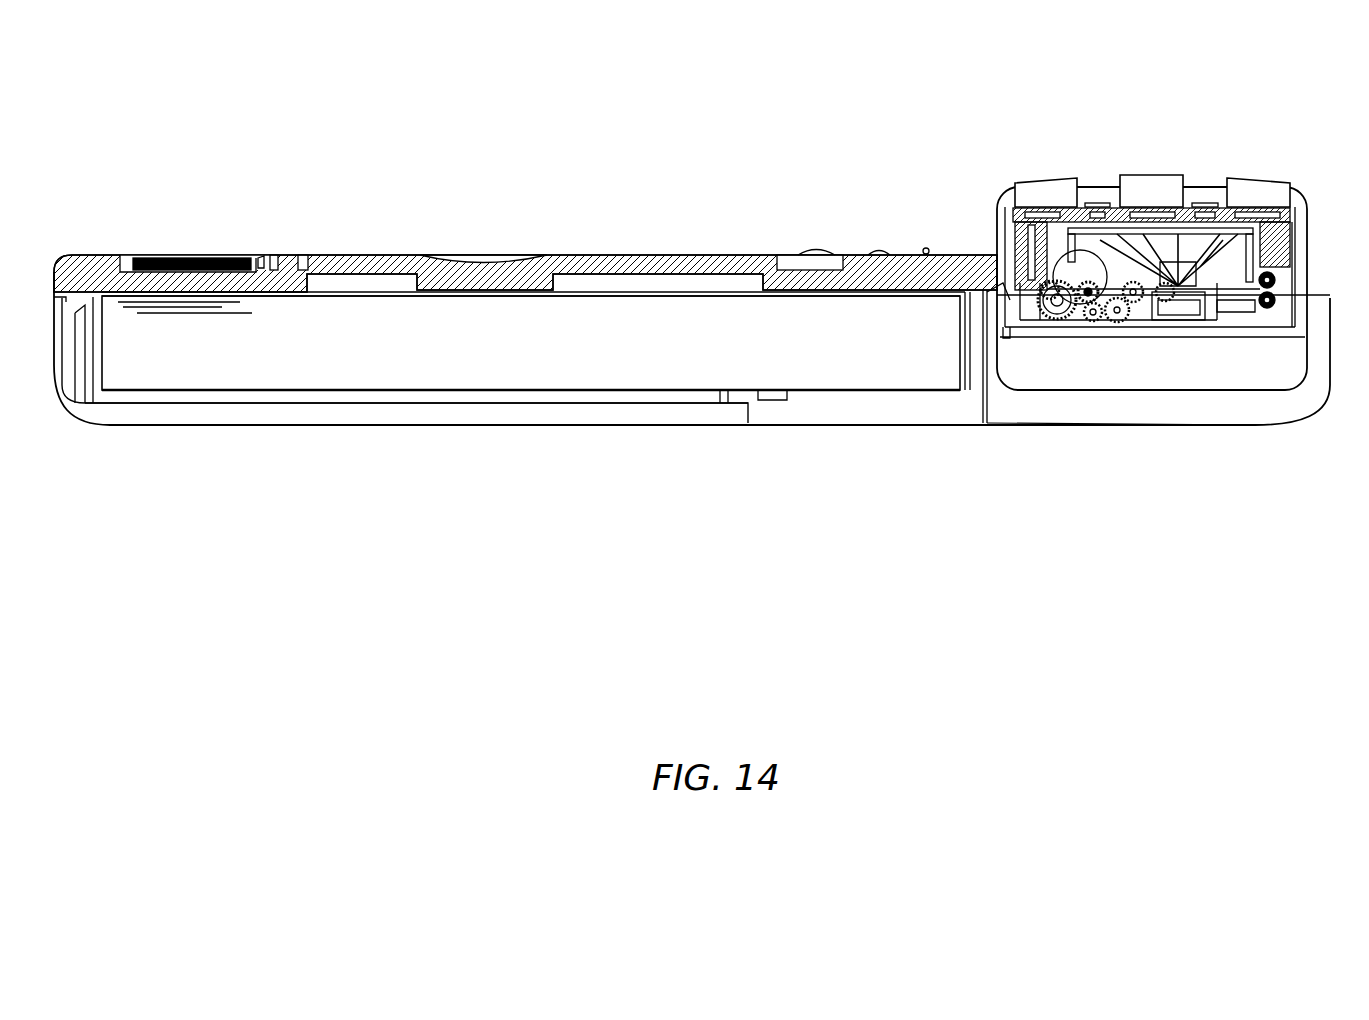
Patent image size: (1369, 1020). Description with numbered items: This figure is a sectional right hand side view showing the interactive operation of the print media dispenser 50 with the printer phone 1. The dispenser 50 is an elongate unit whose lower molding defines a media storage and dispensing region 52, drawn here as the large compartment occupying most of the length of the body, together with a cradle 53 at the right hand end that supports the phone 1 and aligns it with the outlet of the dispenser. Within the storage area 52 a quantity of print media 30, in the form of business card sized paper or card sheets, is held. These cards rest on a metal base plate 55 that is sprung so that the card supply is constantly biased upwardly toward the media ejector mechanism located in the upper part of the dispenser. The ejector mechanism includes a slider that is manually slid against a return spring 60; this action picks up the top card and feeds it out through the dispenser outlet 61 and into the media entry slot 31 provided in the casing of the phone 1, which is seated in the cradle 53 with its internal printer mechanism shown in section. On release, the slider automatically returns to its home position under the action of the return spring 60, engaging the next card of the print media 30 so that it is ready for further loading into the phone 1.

The preferred embodiment 1 is at (1217, 147).
The print media 30 is at (210, 258).
The entry slot 31 is at (987, 292).
The print media dispenser 50 is at (332, 477).
The media storage and dispensing region 52 is at (585, 343).
The cradle 53 is at (1193, 403).
The metal base plate 55 is at (192, 393).
The return spring 60 is at (135, 257).
The dispenser outlet 61 is at (953, 254).